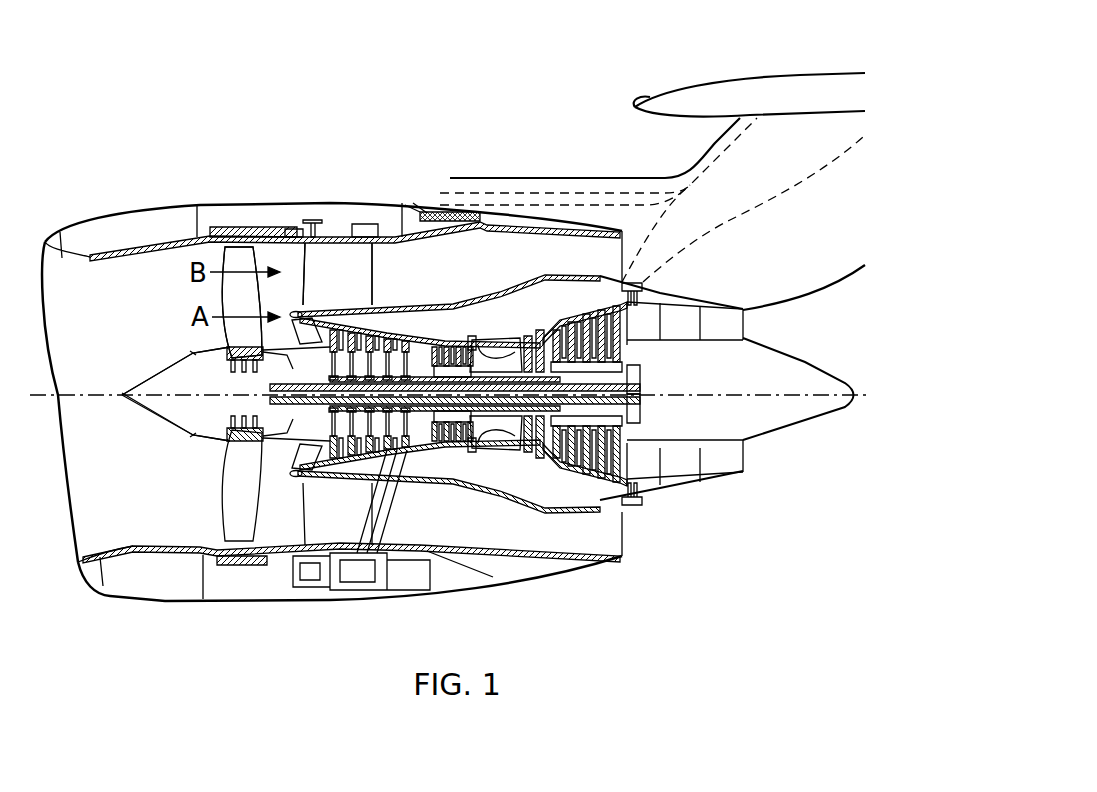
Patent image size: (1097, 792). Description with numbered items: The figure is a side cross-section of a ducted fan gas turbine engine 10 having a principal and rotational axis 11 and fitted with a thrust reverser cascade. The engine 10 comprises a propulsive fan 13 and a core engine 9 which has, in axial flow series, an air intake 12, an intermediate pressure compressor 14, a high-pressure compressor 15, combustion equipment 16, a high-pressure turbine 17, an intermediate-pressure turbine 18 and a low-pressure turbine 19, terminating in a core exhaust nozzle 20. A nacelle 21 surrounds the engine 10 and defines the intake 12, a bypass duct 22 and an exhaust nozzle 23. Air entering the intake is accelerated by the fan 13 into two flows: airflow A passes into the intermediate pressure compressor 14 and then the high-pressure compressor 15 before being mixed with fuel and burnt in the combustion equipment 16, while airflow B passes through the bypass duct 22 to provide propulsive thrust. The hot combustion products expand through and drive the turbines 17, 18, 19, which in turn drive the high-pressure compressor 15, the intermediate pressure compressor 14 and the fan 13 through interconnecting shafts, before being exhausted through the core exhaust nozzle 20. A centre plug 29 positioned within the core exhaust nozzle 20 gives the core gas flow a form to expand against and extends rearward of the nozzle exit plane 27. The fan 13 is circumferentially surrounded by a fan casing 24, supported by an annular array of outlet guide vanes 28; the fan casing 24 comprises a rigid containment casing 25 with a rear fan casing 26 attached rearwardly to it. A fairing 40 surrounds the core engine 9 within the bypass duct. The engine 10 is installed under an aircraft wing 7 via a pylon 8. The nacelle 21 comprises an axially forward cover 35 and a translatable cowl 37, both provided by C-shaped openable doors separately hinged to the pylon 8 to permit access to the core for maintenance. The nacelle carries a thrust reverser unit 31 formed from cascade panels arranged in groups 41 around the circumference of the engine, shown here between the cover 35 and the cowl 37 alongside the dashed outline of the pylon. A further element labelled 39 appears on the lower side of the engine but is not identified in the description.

The aircraft wing 7 is at (662, 91).
The pylon 8 is at (697, 158).
The core engine 9 is at (563, 492).
The ducted fan gas turbine engine 10 is at (121, 142).
The principal and rotational axis 11 is at (73, 400).
The air intake 12 is at (70, 258).
The propulsive fan 13 is at (223, 328).
The intermediate pressure compressor 14 is at (365, 455).
The high-pressure compressor 15 is at (430, 438).
The combustion equipment 16 is at (487, 443).
The high-pressure turbine 17 is at (502, 442).
The intermediate-pressure turbine 18 is at (542, 448).
The low-pressure turbine 19 is at (560, 487).
The core exhaust nozzle 20 is at (733, 477).
The nacelle 21 is at (150, 206).
The bypass duct 22 is at (351, 392).
The exhaust nozzle 23 is at (622, 233).
The fan casing 24 is at (283, 229).
The rigid containment casing 25 is at (238, 228).
The rear fan casing 26 is at (352, 235).
The exit plane 27 is at (747, 452).
The outlet guide vanes 28 is at (312, 263).
The centre plug 29 is at (800, 362).
The thrust reverser unit 31 is at (447, 191).
The axially forward cover 35 is at (380, 203).
The translatable cowl 37 is at (492, 193).
The accessory gearbox 39 is at (467, 553).
The fairing 40 is at (455, 300).
The cascade panel groups 41 is at (315, 220).